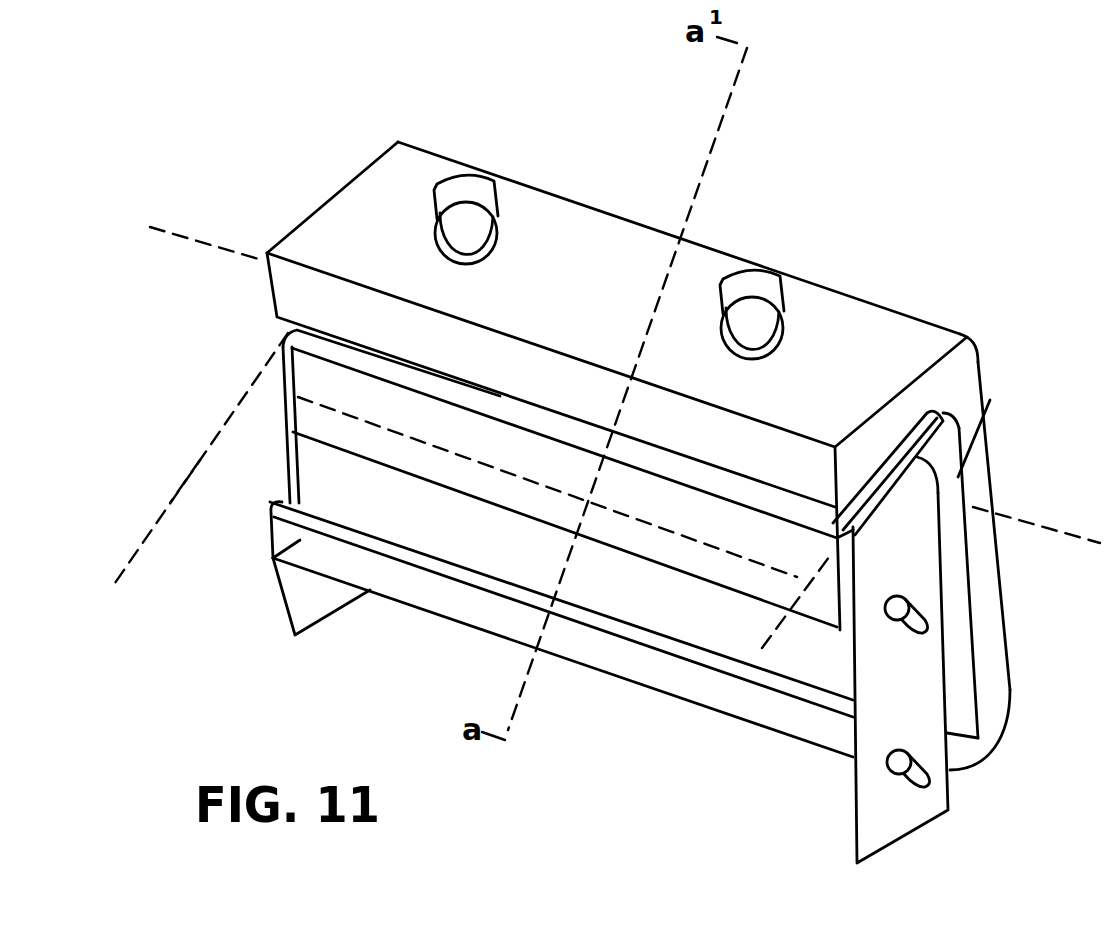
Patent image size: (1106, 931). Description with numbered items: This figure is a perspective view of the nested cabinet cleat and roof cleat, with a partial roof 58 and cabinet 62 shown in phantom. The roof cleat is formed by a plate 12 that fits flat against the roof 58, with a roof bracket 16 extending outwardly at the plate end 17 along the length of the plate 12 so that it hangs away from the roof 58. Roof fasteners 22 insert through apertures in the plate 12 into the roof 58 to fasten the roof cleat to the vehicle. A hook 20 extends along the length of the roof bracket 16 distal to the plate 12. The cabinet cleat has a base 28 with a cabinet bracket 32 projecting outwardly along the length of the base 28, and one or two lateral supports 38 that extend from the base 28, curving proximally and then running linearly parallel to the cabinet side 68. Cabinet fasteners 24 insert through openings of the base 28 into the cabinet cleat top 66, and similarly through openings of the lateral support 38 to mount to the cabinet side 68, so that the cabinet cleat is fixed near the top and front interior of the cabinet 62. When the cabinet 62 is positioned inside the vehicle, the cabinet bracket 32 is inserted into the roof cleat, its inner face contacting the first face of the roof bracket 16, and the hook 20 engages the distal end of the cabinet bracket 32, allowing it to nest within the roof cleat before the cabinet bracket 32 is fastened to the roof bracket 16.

The plate 12 is at (893, 330).
The roof fasteners 22 is at (775, 278).
The plate end 17 is at (965, 419).
The roof bracket 16 is at (1010, 520).
The lateral supports 38 is at (877, 827).
The cabinet fasteners 24 is at (922, 776).
The hook 20 is at (276, 558).
The cabinet bracket 32 is at (300, 486).
The cabinet cleat top 66 is at (757, 547).
The base 28 is at (687, 537).
The roof 58 is at (193, 238).
The cabinet 62 is at (207, 447).
The cabinet side 68 is at (212, 579).